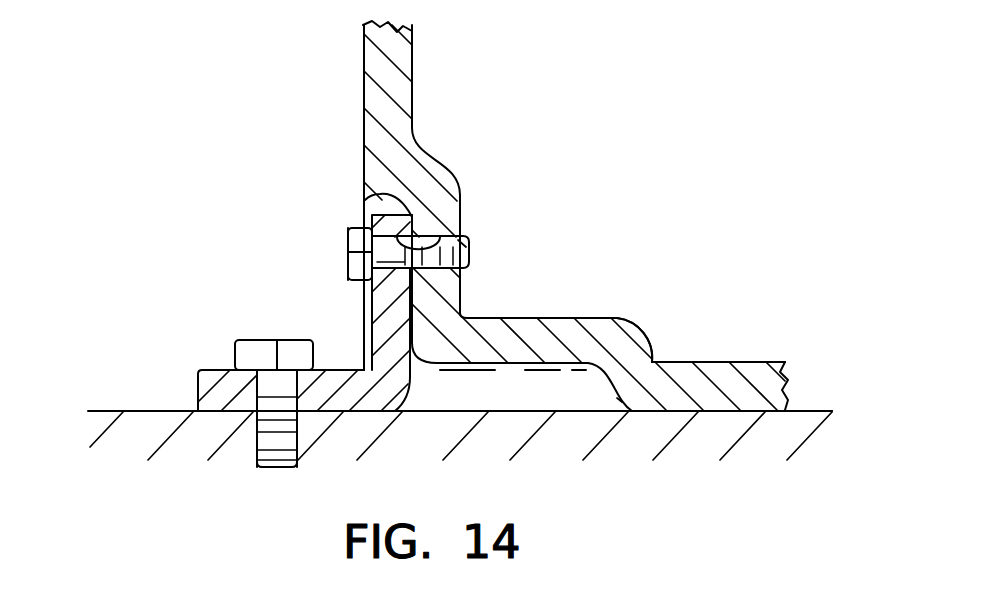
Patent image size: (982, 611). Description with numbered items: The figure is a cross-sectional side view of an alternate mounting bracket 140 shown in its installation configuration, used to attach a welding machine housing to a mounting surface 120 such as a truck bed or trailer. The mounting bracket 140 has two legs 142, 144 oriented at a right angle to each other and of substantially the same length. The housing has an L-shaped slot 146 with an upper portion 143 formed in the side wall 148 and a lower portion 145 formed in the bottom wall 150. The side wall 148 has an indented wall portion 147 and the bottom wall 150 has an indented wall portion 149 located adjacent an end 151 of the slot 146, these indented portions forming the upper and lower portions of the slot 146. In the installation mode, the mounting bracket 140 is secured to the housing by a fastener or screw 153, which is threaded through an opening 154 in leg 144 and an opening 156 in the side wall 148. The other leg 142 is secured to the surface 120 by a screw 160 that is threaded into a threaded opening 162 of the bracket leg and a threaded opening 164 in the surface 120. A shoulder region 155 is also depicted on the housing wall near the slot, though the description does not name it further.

The mounting surface 120 is at (112, 409).
The mounting bracket 140 is at (197, 369).
The leg 142 is at (227, 398).
The upper portion of slot 143 is at (380, 293).
The leg 144 is at (380, 310).
The lower portion of slot 145 is at (524, 366).
The L-shaped slot 146 is at (463, 394).
The indented wall portion 147 is at (423, 180).
The side wall 148 is at (375, 63).
The indented wall portion 149 is at (634, 322).
The bottom wall 150 is at (748, 400).
The end of slot 151 is at (363, 202).
The fastener or screw 153 is at (347, 237).
The opening 154 is at (445, 226).
The shoulder 155 is at (582, 316).
The opening 156 is at (471, 250).
The screw 160 is at (248, 350).
The threaded opening 162 is at (297, 440).
The threaded opening 164 is at (290, 382).